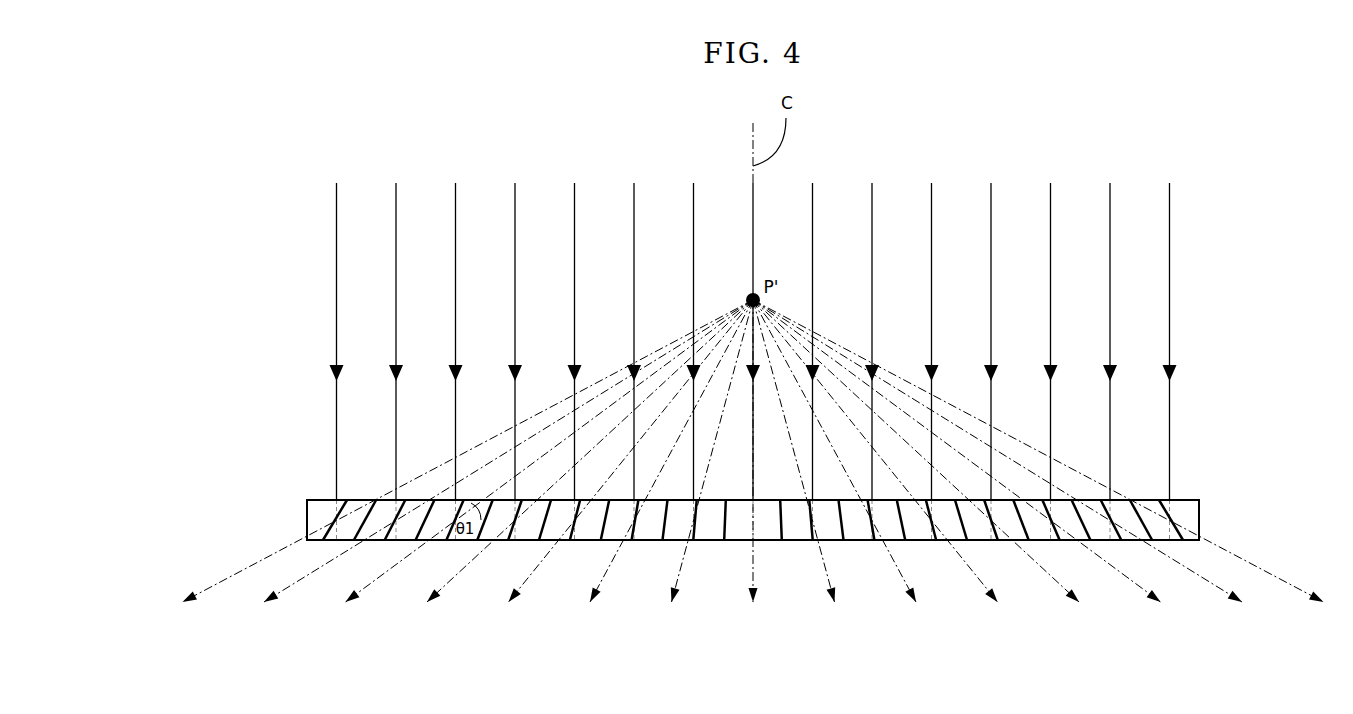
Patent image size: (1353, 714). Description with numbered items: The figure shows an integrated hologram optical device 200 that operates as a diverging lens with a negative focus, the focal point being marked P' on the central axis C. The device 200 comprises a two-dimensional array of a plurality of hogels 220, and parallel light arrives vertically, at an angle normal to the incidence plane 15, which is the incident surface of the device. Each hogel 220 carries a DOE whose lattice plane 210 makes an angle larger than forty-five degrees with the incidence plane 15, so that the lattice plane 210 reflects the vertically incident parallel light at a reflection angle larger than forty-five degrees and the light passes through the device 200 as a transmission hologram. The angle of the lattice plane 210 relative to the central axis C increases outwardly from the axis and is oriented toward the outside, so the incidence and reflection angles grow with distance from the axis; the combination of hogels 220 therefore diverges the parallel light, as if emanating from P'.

The incidence plane 15 is at (318, 500).
The integrated hologram optical device 200 is at (1214, 476).
The lattice plane 210 is at (327, 531).
The hogels 220 is at (1160, 527).